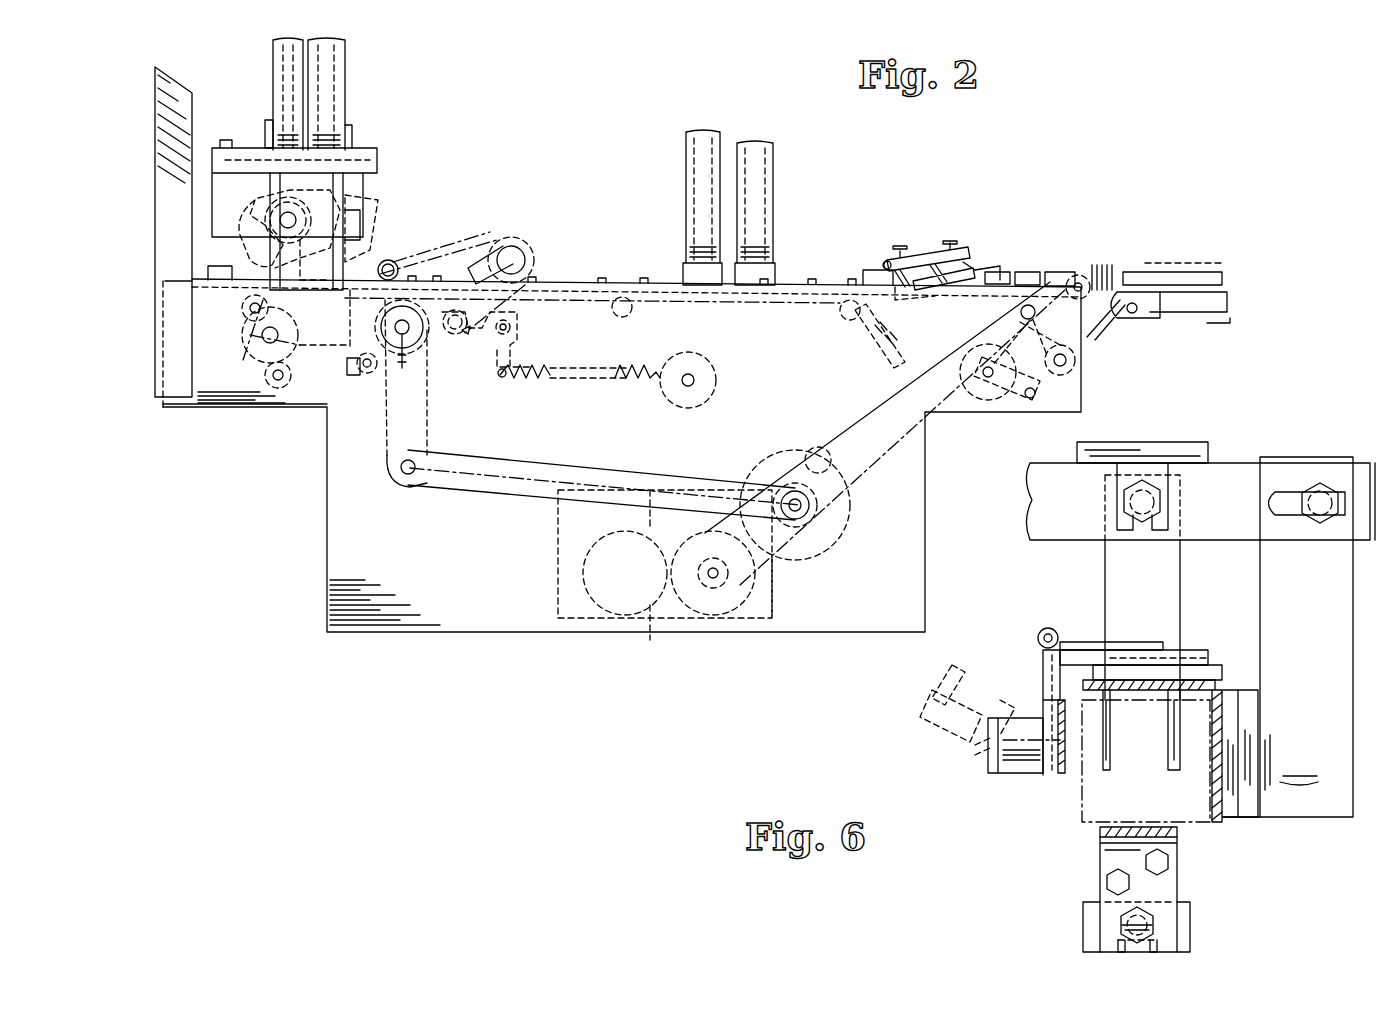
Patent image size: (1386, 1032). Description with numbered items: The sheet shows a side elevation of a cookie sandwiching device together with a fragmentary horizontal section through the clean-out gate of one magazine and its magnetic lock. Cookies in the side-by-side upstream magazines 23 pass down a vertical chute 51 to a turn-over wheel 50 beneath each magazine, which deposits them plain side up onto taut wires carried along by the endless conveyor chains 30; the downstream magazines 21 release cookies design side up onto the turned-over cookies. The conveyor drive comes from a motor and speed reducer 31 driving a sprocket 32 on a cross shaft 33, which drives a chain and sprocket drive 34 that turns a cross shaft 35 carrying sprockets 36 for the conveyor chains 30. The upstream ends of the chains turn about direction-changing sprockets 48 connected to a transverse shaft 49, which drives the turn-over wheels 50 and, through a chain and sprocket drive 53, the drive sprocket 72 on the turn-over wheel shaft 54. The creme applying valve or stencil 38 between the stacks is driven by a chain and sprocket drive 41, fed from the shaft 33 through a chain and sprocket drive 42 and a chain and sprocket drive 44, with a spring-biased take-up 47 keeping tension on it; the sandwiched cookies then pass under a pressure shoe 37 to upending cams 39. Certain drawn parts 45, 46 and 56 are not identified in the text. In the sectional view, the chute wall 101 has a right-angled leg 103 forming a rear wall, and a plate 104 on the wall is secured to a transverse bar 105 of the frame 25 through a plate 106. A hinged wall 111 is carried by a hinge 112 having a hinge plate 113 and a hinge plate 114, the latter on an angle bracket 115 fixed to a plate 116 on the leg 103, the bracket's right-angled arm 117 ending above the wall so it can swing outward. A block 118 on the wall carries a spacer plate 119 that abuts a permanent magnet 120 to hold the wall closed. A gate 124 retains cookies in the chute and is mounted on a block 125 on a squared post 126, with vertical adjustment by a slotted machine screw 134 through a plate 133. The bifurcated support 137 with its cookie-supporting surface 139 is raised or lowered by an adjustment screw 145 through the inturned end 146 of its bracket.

In FIG. 2, the downstream magazine 21 is at (686, 177).
In FIG. 2, the upstream magazine 23 is at (270, 80).
In FIG. 6, the frame 25 is at (1362, 462).
In FIG. 2, the endless conveyor chains 30 is at (912, 308).
In FIG. 2, the motor and speed reducer 31 is at (665, 580).
In FIG. 2, the sprocket 32 is at (775, 560).
In FIG. 2, the cross shaft 33 is at (800, 507).
In FIG. 2, the chain and sprocket drive 34 is at (878, 468).
In FIG. 2, the cross shaft 35 is at (1035, 315).
In FIG. 2, the sprockets 36 is at (1022, 312).
In FIG. 2, the pressure shoe 37 is at (965, 262).
In FIG. 2, the creme applying valve or stencil 38 is at (512, 242).
In FIG. 2, the upending cams 39 is at (1085, 283).
In FIG. 2, the chain and sprocket drive 41 is at (412, 255).
In FIG. 2, the chain and sprocket drive 42 is at (636, 470).
In FIG. 2, the chain and sprocket drive 44 is at (432, 420).
In FIG. 2, the roller 45 is at (402, 346).
In FIG. 2, the pivot 46 is at (460, 336).
In FIG. 2, the spring-biased take-up 47 is at (525, 345).
In FIG. 2, the direction-changing sprockets 48 is at (338, 332).
In FIG. 2, the transverse shaft 49 is at (262, 332).
In FIG. 2, the turn-over wheel 50 is at (350, 222).
In FIG. 2, the vertical chute 51 is at (265, 120).
In FIG. 2, the chain and sprocket drive 53 is at (288, 229).
In FIG. 2, the shaft 54 is at (304, 231).
In FIG. 2, the base 56 is at (245, 407).
In FIG. 2, the drive sprocket 72 is at (304, 260).
In FIG. 6, the wall 101 is at (1225, 812).
In FIG. 6, the right-angled leg 103 is at (1135, 690).
In FIG. 6, the plate 104 is at (1250, 815).
In FIG. 6, the transverse bar 105 is at (1300, 768).
In FIG. 6, the plate 106 is at (1250, 783).
In FIG. 6, the hinged wall 111 is at (990, 768).
In FIG. 6, the hinge 112 is at (1055, 628).
In FIG. 6, the hinge plate 113 is at (1045, 680).
In FIG. 6, the hinge plate 114 is at (1130, 642).
In FIG. 6, the angle bracket 115 is at (1198, 652).
In FIG. 6, the plate 116 is at (1222, 670).
In FIG. 6, the right-angled arm 117 is at (1045, 705).
In FIG. 6, the block 118 is at (945, 735).
In FIG. 6, the spacer plate 119 is at (935, 690).
In FIG. 6, the permanent magnet 120 is at (1022, 765).
In FIG. 6, the gate 124 is at (1137, 825).
In FIG. 6, the block 125 is at (1083, 912).
In FIG. 6, the squared post 126 is at (1118, 935).
In FIG. 6, the plate 133 is at (1100, 860).
In FIG. 6, the slotted machine screw 134 is at (1165, 930).
In FIG. 6, the bifurcated support 137 is at (1178, 598).
In FIG. 6, the cookie-supporting surface 139 is at (1168, 742).
In FIG. 6, the adjustment screw 145 is at (1168, 487).
In FIG. 6, the inturned end 146 is at (1118, 515).